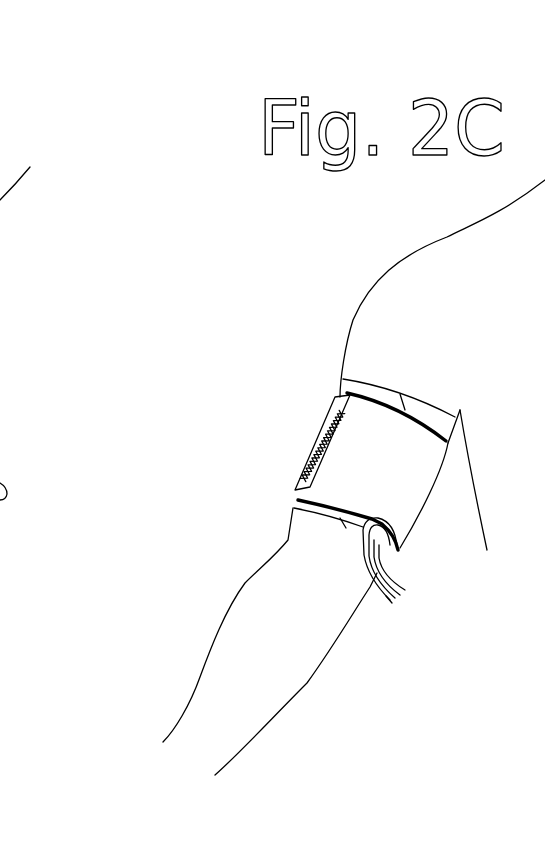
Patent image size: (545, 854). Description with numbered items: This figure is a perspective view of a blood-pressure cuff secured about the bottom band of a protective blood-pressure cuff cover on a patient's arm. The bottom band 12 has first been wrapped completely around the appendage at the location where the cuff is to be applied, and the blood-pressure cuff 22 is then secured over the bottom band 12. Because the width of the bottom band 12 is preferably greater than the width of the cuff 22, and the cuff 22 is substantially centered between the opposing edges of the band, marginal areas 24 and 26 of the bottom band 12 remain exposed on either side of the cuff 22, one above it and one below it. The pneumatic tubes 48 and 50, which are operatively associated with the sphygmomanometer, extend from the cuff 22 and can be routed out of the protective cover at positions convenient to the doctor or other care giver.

The bottom band 12 is at (372, 383).
The blood-pressure cuff 22 is at (412, 482).
The marginal area 24 is at (343, 522).
The marginal area 26 is at (400, 400).
The pneumatic tube 48 is at (382, 583).
The pneumatic tube 50 is at (397, 578).